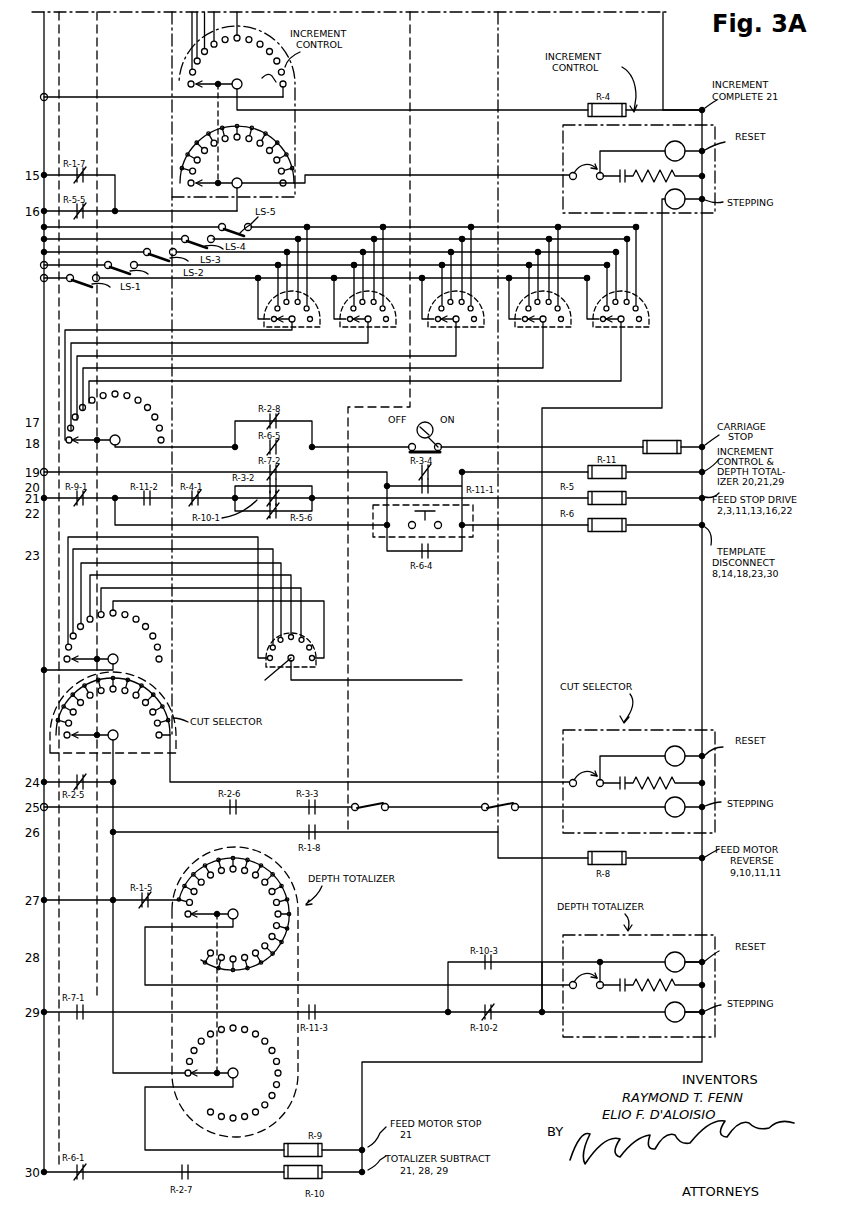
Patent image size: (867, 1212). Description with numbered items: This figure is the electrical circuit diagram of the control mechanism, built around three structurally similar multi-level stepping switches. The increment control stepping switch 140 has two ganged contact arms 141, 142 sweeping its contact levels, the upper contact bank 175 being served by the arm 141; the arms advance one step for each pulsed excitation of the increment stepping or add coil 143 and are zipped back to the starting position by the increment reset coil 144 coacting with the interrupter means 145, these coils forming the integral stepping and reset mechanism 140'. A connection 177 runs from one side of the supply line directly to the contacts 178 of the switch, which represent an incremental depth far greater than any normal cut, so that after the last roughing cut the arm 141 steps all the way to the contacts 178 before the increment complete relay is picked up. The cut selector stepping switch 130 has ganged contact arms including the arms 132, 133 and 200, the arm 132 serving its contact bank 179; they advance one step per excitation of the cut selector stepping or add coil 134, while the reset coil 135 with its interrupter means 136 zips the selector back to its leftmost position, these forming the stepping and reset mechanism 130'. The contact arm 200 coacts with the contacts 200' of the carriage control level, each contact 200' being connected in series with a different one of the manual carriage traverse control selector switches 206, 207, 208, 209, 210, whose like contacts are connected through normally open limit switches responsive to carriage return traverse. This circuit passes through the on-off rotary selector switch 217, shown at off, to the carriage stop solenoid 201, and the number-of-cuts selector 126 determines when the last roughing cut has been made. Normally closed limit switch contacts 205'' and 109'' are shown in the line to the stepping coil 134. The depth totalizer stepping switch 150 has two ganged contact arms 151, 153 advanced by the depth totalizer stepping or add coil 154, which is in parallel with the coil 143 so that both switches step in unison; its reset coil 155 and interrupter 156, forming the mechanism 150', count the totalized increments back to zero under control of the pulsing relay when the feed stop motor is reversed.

The increment control stepping switch bank 175 is at (196, 54).
The contact arm 141 is at (210, 81).
The contacts 178 is at (264, 78).
The connection 177 is at (140, 86).
The increment control stepping switch 140 is at (258, 111).
The contact arm 142 is at (227, 178).
The stepping and reset mechanism 140' is at (609, 169).
The interrupter means 145 is at (592, 172).
The increment reset coil 144 is at (666, 150).
The increment stepping or add coil 143 is at (665, 199).
The carriage traverse control selector switch 206 is at (279, 330).
The carriage traverse control selector switch 207 is at (362, 325).
The carriage traverse control selector switch 208 is at (452, 325).
The carriage traverse control selector switch 209 is at (540, 327).
The carriage traverse control selector switch 210 is at (617, 325).
The contact arm 200 is at (150, 419).
The contacts 200' is at (106, 413).
The on-off rotary selector switch 217 is at (433, 445).
The carriage stop solenoid 201 is at (675, 427).
The number-of-cuts selector 126 is at (268, 672).
The stepping switch bank 179 is at (84, 629).
The contact arm 132 is at (127, 646).
The cut selector stepping switch 130 is at (134, 712).
The contact arm 133 is at (107, 732).
The stepping and reset mechanism 130' is at (632, 770).
The interrupter means 136 is at (590, 773).
The reset coil 135 is at (666, 748).
The cut selector stepping or add coil 134 is at (665, 814).
The normally closed switch 205'' is at (385, 816).
The normally closed switch 109'' is at (496, 821).
The depth totalizer stepping switch 150 is at (257, 992).
The contact arm 151 is at (212, 912).
The contact arm 153 is at (225, 1070).
The stepping and reset mechanism 150' is at (632, 978).
The reset coil 155 is at (666, 954).
The interrupter 156 is at (578, 988).
The depth totalizer stepping or add coil 154 is at (665, 1014).